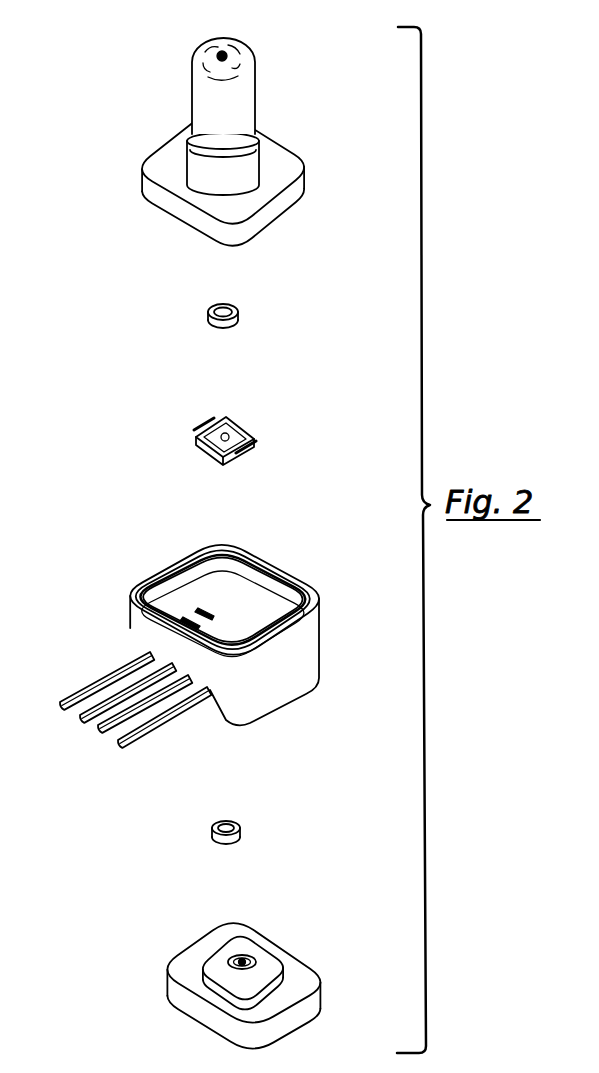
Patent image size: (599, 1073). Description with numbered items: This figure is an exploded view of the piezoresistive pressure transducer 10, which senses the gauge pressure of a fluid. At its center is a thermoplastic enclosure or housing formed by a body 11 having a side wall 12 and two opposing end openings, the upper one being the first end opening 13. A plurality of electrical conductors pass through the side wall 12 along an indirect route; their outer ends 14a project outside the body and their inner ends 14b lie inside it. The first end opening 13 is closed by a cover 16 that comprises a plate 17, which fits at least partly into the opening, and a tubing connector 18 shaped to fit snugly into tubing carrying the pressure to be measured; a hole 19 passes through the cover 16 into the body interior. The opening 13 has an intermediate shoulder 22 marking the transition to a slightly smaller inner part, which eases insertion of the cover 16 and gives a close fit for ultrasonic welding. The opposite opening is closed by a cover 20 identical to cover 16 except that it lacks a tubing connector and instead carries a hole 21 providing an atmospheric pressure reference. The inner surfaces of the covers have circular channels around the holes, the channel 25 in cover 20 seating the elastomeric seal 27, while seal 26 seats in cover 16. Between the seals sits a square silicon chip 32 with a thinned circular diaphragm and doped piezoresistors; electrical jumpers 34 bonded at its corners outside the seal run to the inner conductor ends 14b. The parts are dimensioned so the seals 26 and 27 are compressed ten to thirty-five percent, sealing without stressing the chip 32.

The piezoresistive pressure transducer 10 is at (31, 393).
The body 11 is at (322, 575).
The side wall 12 is at (128, 622).
The first end opening 13 is at (173, 565).
The outer ends of electrical conductors 14a is at (121, 746).
The inner ends of electrical conductors 14b is at (204, 610).
The cover 16 is at (173, 120).
The plate 17 is at (152, 153).
The tubing connector 18 is at (257, 103).
The hole 19 is at (227, 53).
The cover 20 is at (142, 973).
The hole 21 is at (256, 958).
The shoulder 22 is at (261, 582).
The channel 25 is at (226, 958).
The elastomeric seal 26 is at (240, 316).
The elastomeric seal 27 is at (240, 831).
The chip 32 is at (248, 430).
The electrical jumpers 34 is at (200, 433).